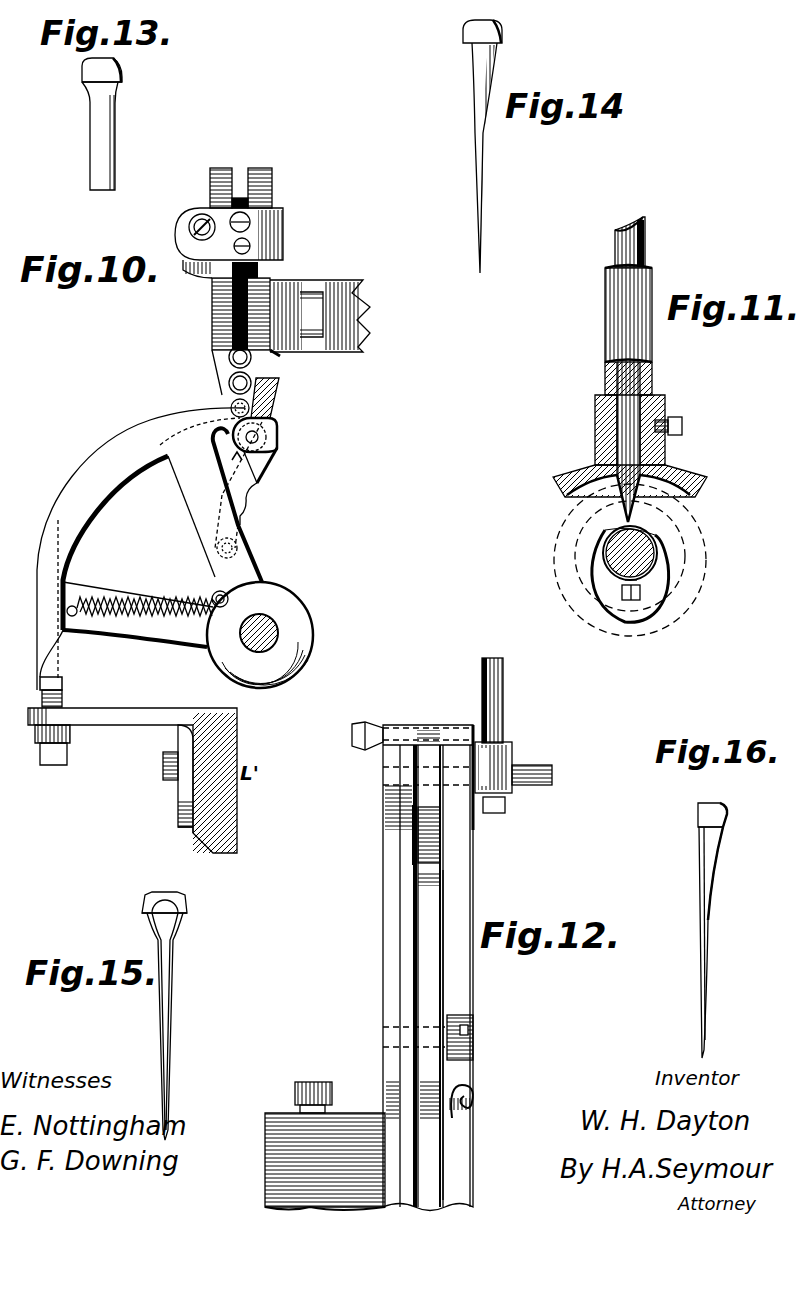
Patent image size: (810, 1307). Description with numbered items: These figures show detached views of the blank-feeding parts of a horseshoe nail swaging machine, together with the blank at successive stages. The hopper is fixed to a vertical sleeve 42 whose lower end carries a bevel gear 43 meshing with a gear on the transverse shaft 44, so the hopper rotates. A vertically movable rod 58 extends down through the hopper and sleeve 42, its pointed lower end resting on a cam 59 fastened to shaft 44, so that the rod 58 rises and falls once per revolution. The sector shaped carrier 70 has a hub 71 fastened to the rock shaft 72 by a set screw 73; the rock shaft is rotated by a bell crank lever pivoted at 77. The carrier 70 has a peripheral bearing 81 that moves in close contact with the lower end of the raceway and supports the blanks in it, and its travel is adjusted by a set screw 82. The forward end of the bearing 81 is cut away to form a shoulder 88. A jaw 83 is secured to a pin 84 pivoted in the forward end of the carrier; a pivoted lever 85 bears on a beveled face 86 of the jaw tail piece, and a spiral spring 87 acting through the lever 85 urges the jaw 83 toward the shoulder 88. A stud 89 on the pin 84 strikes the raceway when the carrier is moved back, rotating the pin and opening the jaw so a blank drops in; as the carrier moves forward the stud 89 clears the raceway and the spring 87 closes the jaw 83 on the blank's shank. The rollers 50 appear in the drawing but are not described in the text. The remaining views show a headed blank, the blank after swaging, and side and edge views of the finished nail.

In FIG. 11, the sleeve 42 is at (605, 341).
In FIG. 11, the bevel gear 43 is at (570, 468).
In FIG. 11, the transverse shaft 44 is at (657, 545).
In FIG. 10, the rollers 50 is at (228, 353).
In FIG. 11, the vertically movable rod 58 is at (645, 238).
In FIG. 11, the cam 59 is at (658, 610).
In FIG. 10, the sector shaped carrier 70 is at (97, 475).
In FIG. 12, the sector shaped carrier 70 is at (417, 968).
In FIG. 12, the hub 71 is at (325, 1151).
In FIG. 10, the rock shaft 72 is at (280, 632).
In FIG. 12, the set screw 73 is at (313, 1085).
In FIG. 10, the pivot 77 is at (276, 604).
In FIG. 10, the peripheral bearing 81 is at (278, 420).
In FIG. 12, the peripheral bearing 81 is at (398, 757).
In FIG. 10, the set screw 82 is at (63, 693).
In FIG. 10, the jaw 83 is at (266, 461).
In FIG. 12, the jaw 83 is at (440, 828).
In FIG. 10, the pin 84 is at (259, 437).
In FIG. 12, the pin 84 is at (553, 772).
In FIG. 10, the pivoted lever 85 is at (246, 519).
In FIG. 12, the pivoted lever 85 is at (437, 967).
In FIG. 10, the beveled face 86 is at (234, 460).
In FIG. 12, the beveled face 86 is at (408, 832).
In FIG. 10, the spiral spring 87 is at (147, 591).
In FIG. 12, the spiral spring 87 is at (475, 1093).
In FIG. 10, the shoulder 88 is at (230, 405).
In FIG. 10, the stud 89 is at (270, 394).
In FIG. 12, the stud 89 is at (503, 710).